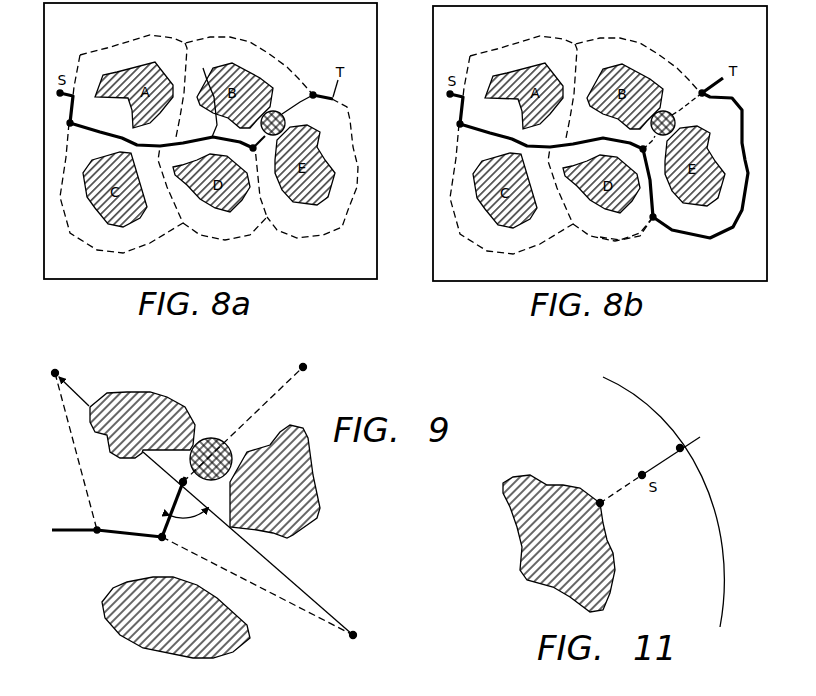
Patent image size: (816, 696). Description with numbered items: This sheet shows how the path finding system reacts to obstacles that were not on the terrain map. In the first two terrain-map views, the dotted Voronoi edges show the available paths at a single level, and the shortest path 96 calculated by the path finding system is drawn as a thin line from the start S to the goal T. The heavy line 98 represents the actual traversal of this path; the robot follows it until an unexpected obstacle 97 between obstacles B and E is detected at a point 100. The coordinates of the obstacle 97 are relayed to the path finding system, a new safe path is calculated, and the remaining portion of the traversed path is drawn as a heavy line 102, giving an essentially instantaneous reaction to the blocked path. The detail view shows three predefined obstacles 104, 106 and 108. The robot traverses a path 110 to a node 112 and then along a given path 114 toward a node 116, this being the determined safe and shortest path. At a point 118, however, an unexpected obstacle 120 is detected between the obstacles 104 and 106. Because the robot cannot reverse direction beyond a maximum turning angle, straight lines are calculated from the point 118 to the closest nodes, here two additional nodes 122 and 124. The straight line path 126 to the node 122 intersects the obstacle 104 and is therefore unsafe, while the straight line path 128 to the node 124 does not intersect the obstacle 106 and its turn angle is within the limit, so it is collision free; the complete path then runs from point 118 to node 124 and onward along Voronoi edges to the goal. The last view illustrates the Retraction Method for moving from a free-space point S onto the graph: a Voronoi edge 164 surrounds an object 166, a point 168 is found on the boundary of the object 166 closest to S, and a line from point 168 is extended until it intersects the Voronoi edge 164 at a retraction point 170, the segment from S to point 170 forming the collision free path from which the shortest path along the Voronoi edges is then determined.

In FIG. 8a, the shortest path 96 is at (316, 98).
In FIG. 8a, the unexpected obstacle 97 is at (285, 111).
In FIG. 8b, the unexpected obstacle 97 is at (674, 111).
In FIG. 8a, the traversed path 98 is at (147, 143).
In FIG. 8b, the traversed path 98 is at (537, 144).
In FIG. 8a, the detection point 100 is at (204, 92).
In FIG. 8b, the remaining traversed path 102 is at (713, 239).
In FIG. 9, the predefined obstacle 104 is at (184, 400).
In FIG. 9, the predefined obstacle 106 is at (319, 484).
In FIG. 9, the predefined obstacle 108 is at (103, 626).
In FIG. 9, the path 110 is at (79, 537).
In FIG. 9, the node 112 is at (158, 542).
In FIG. 9, the given path 114 is at (280, 394).
In FIG. 9, the node 116 is at (306, 367).
In FIG. 9, the point 118 is at (178, 494).
In FIG. 9, the unexpected obstacle 120 is at (179, 482).
In FIG. 9, the node 122 is at (54, 370).
In FIG. 9, the node 124 is at (356, 633).
In FIG. 9, the straight line path 126 is at (87, 402).
In FIG. 9, the straight line path 128 is at (310, 583).
In FIG. 11, the Voronoi edge 164 is at (717, 508).
In FIG. 11, the object 166 is at (615, 553).
In FIG. 11, the boundary point 168 is at (601, 500).
In FIG. 11, the retraction point 170 is at (684, 446).